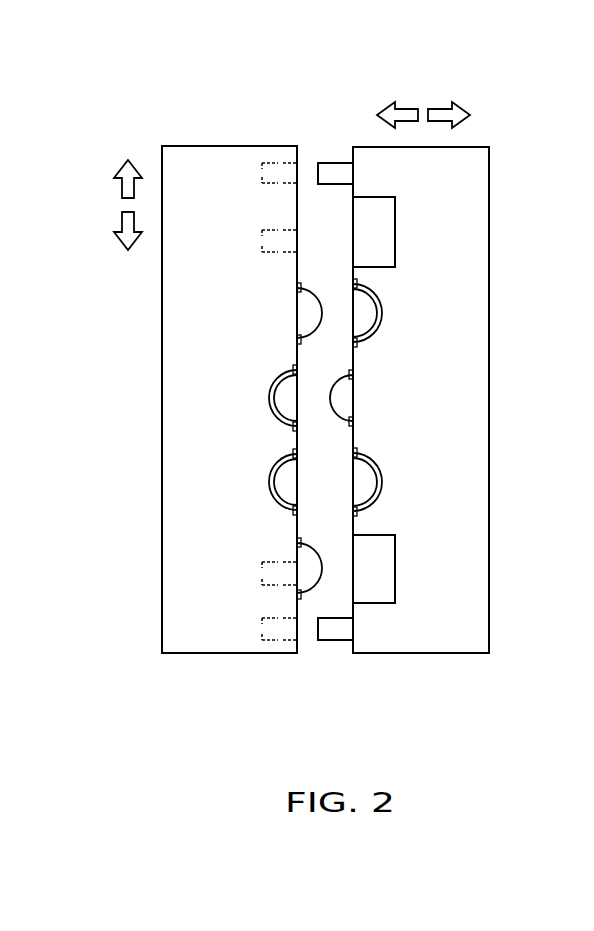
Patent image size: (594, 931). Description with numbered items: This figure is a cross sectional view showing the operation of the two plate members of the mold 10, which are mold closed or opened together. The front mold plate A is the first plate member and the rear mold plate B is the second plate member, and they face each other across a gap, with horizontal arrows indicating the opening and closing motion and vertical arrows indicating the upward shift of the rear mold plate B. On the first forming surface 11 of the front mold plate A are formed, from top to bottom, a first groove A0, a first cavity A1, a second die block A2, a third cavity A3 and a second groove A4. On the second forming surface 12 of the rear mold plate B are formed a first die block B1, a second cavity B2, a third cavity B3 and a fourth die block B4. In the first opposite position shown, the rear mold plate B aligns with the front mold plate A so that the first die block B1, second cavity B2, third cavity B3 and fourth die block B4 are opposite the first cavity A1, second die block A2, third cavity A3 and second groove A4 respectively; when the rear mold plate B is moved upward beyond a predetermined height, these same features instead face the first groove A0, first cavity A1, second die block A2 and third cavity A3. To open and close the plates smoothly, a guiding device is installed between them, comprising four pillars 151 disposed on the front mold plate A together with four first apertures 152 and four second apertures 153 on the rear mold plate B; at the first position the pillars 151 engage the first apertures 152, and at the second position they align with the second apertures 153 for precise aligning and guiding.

The mold 10 is at (466, 353).
The first forming surface 11 is at (466, 353).
The second forming surface 12 is at (297, 160).
The pillars 151 is at (326, 163).
The first apertures 152 is at (262, 580).
The second apertures 153 is at (270, 636).
The front mold plate A is at (489, 361).
The first groove A0 is at (395, 220).
The first cavity A1 is at (381, 304).
The second die block A2 is at (346, 388).
The third cavity A3 is at (381, 470).
The second groove A4 is at (395, 560).
The rear mold plate B is at (185, 363).
The first die block B1 is at (305, 306).
The second cavity B2 is at (275, 383).
The third cavity B3 is at (275, 477).
The fourth die block B4 is at (290, 572).